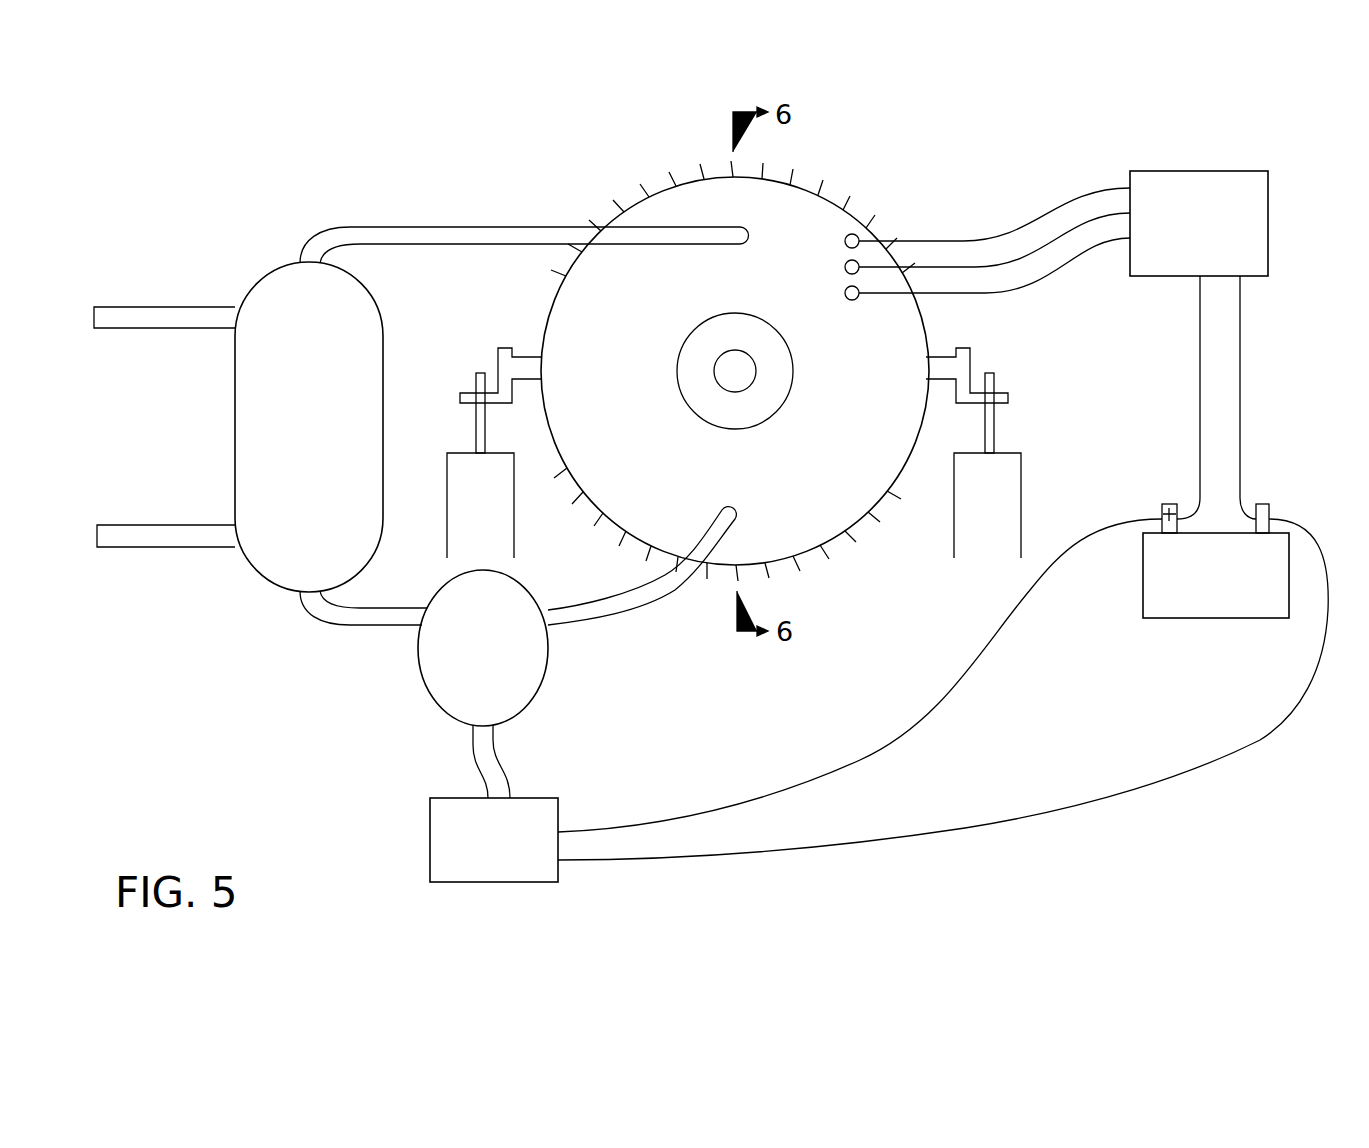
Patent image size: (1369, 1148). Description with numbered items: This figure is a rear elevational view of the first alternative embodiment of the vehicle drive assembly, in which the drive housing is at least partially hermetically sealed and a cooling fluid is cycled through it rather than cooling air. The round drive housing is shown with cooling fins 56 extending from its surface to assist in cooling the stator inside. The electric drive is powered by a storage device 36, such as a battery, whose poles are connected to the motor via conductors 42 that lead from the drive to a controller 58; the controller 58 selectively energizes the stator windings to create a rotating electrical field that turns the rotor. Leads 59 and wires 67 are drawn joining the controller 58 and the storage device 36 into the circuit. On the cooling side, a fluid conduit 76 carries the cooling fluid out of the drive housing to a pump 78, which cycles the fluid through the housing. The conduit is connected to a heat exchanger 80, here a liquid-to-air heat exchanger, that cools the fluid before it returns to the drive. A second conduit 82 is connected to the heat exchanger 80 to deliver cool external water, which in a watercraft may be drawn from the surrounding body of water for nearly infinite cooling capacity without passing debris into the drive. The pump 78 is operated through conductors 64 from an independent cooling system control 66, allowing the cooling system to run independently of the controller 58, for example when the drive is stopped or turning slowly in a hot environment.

The storage device 36 is at (1227, 619).
The conductors 42 is at (1075, 300).
The cooling fins 56 is at (700, 174).
The controller 58 is at (1216, 243).
The power leads 59 is at (1200, 400).
The conductors 64 is at (478, 762).
The independent cooling system control 66 is at (430, 822).
The wires 67 is at (915, 739).
The fluid conduit 76 is at (416, 227).
The pump 78 is at (501, 662).
The heat exchanger 80 is at (326, 435).
The second conduit 82 is at (163, 307).